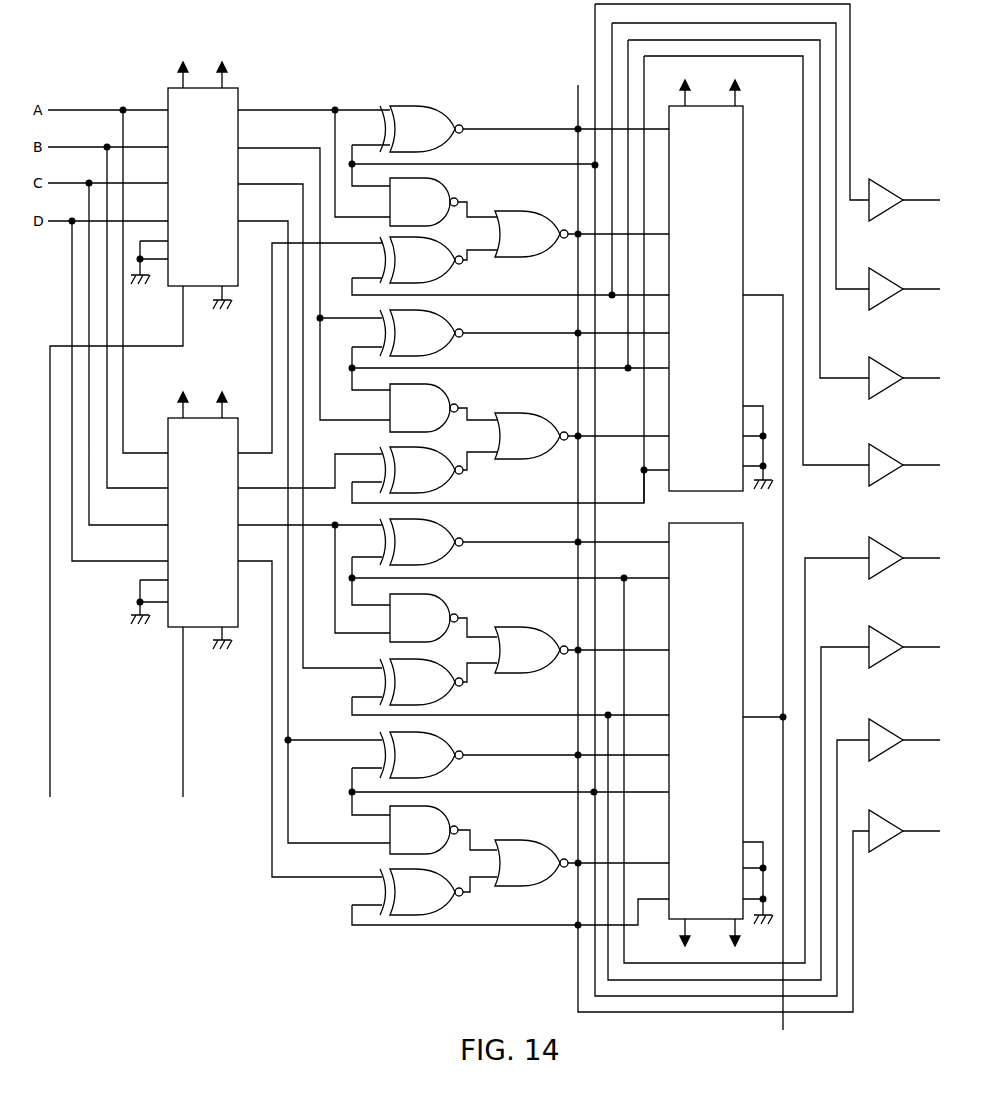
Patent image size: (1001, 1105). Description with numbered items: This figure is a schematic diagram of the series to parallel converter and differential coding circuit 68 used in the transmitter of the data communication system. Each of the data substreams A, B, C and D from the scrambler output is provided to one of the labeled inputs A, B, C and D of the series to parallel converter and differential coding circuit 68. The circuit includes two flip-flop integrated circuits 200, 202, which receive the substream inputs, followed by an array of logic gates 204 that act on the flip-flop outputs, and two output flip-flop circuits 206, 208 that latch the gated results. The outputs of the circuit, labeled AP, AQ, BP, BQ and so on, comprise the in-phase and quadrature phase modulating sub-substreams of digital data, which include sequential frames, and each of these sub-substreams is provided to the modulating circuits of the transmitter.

The flip-flop integrated circuit 200 is at (238, 92).
The flip-flop integrated circuit 202 is at (172, 630).
The logic gates 204 is at (405, 930).
The output flip-flop circuit 206 is at (743, 172).
The output flip-flop circuit 208 is at (675, 920).
The series to parallel converter and differential coding circuit 68 is at (921, 922).